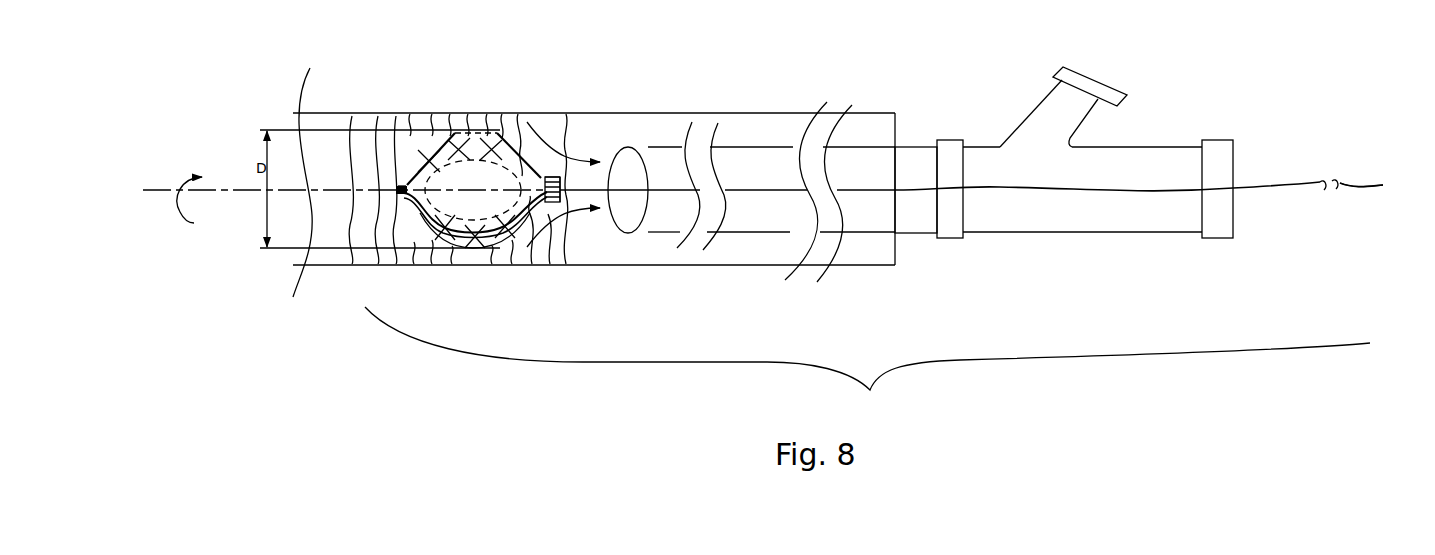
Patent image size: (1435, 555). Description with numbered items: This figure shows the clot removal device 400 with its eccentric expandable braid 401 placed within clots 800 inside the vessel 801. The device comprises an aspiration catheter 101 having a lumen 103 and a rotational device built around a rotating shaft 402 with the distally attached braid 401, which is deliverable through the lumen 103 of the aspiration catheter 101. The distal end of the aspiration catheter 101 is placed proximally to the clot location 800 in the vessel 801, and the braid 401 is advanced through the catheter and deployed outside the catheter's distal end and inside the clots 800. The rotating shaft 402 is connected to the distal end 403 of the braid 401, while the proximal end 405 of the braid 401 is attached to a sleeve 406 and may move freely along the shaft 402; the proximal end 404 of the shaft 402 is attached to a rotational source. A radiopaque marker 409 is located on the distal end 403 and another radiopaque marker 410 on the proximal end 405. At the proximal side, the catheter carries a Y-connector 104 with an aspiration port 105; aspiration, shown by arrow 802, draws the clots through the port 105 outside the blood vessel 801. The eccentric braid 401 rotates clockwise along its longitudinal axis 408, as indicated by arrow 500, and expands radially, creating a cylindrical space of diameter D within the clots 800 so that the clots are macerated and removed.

The aspiration catheter 101 is at (736, 146).
The axial lumen 103 is at (632, 171).
The proximal Y-connector 104 is at (1139, 234).
The aspiration port 105 is at (1027, 114).
The clot removal device 400 is at (867, 364).
The eccentric expandable braid 401 is at (481, 255).
The rotating shaft 402 is at (507, 231).
The distal end of the expandable braid 403 is at (395, 198).
The proximal end of the rotating shaft 404 is at (1344, 178).
The proximal end of the expandable braid 405 is at (545, 206).
The sleeve 406 is at (562, 176).
The longitudinal axis 408 is at (237, 188).
The radiopaque marker 409 is at (405, 178).
The radiopaque marker 410 is at (553, 175).
The arrow 500 is at (182, 219).
The clots 800 is at (370, 171).
The vessel 801 is at (879, 112).
The arrow 802 is at (576, 151).